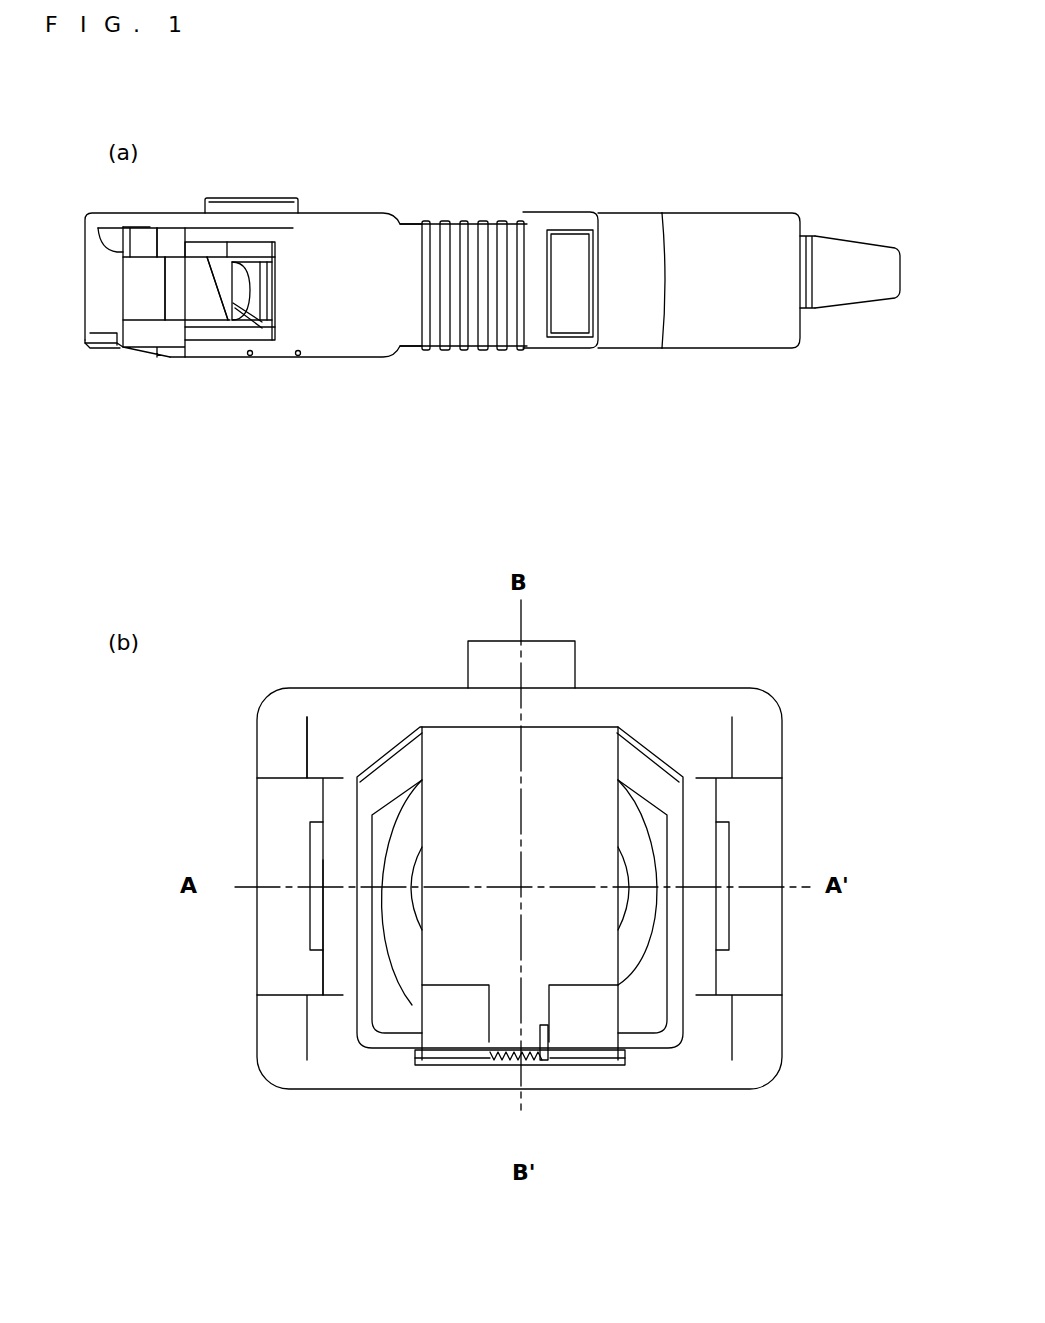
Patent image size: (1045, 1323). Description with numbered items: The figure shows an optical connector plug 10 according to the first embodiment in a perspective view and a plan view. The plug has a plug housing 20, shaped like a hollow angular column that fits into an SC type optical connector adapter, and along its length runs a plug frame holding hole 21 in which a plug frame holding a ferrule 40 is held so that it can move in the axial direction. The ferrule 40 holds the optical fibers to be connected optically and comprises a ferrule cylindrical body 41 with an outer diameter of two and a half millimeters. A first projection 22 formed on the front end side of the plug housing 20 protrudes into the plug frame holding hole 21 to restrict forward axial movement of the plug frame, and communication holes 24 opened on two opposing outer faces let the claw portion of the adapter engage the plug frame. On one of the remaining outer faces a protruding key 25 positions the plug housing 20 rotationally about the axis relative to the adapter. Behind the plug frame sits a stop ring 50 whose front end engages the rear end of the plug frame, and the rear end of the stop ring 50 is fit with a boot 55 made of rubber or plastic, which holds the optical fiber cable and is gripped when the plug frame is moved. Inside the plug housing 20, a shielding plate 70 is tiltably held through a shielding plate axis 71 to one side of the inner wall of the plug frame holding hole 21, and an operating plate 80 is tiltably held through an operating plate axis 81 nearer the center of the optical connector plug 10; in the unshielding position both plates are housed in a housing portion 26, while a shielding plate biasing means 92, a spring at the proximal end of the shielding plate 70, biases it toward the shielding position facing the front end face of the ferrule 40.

The optical connector plug 10 is at (663, 158).
The plug housing 20 is at (323, 317).
The plug frame holding hole 21 is at (98, 273).
The first projection 22 is at (148, 272).
The communication holes 24 is at (176, 253).
The protruding key 25 is at (278, 198).
The housing portion 26 is at (88, 333).
The ferrule 40 is at (277, 380).
The ferrule cylindrical body 41 is at (270, 333).
The stop ring 50 is at (623, 313).
The boot 55 is at (712, 317).
The shielding plate 70 is at (207, 287).
The shielding plate axis 71 is at (250, 357).
The operating plate 80 is at (232, 297).
The operating plate axis 81 is at (298, 357).
The shielding plate biasing means 92 is at (498, 1065).